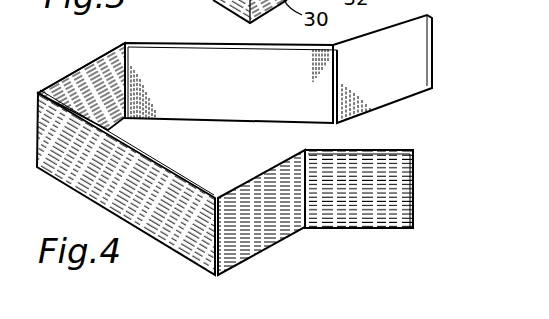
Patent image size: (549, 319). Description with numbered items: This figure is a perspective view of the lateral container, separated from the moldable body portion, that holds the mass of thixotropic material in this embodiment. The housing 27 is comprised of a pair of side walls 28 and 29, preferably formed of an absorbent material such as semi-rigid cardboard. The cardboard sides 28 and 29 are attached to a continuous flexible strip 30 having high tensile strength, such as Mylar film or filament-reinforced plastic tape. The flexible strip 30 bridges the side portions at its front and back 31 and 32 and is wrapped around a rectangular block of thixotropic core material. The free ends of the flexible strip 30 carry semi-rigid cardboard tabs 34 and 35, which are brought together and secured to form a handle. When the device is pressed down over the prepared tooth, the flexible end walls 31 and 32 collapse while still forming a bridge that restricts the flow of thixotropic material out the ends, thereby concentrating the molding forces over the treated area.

The housing 27 is at (36, 169).
The side wall 28 is at (190, 43).
The side wall 29 is at (189, 178).
The continuous flexible strip 30 is at (245, 248).
The front end wall 31 is at (92, 61).
The back end wall 32 is at (65, 77).
The semi-rigid cardboard tab 34 is at (407, 17).
The semi-rigid cardboard tab 35 is at (413, 205).